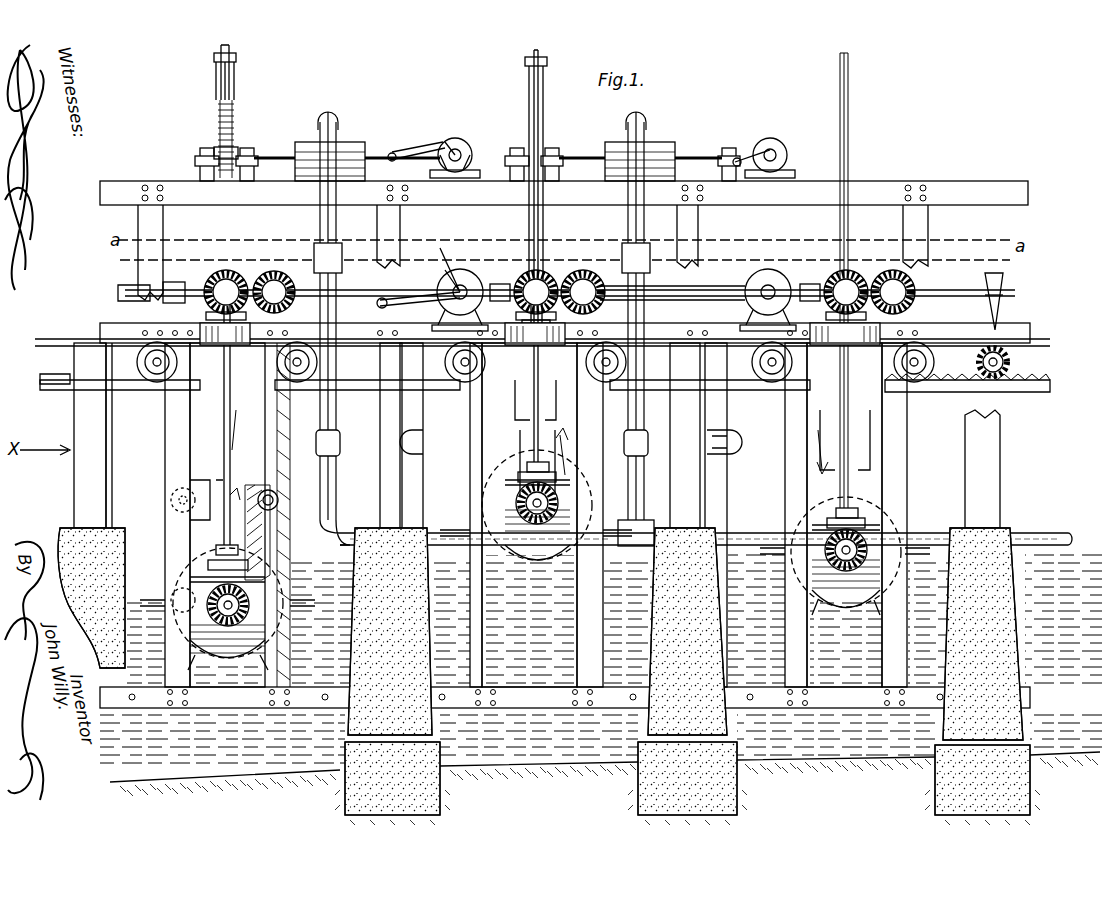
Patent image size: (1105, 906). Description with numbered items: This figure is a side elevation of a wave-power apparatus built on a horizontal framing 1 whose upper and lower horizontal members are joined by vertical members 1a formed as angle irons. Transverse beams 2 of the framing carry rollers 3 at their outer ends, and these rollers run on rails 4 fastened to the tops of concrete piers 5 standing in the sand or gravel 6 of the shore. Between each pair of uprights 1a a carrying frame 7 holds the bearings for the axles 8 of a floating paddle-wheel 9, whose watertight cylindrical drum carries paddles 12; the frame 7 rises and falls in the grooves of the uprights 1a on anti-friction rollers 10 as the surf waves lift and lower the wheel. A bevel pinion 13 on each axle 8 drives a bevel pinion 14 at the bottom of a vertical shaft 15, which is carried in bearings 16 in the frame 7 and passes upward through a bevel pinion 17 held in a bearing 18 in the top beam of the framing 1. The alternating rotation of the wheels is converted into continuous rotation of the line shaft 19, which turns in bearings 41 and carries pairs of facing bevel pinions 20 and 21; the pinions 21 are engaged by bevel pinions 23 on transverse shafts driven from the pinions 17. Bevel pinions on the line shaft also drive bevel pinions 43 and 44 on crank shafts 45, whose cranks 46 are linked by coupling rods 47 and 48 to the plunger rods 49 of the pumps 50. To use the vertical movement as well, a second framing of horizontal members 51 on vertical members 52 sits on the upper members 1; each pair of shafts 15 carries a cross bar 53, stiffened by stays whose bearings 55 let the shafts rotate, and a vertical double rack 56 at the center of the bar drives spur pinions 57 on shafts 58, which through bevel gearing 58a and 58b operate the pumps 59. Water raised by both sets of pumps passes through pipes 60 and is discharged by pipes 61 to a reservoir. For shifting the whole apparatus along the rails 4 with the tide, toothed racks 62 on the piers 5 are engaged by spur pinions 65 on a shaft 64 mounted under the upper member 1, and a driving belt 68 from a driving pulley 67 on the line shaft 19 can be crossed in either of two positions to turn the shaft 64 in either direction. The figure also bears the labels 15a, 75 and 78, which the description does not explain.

The horizontal framing 1 is at (100, 330).
The vertical members 1a is at (165, 440).
The transverse beams 2 is at (140, 338).
The rollers 3 is at (137, 362).
The rails 4 is at (62, 390).
The piers 5 is at (537, 435).
The sand or gravel 6 is at (345, 790).
The carrying frame 7 is at (260, 490).
The axles 8 is at (265, 585).
The floating paddle-wheel 9 is at (546, 574).
The anti-friction rollers 10 is at (171, 502).
The paddles 12 is at (1020, 538).
The bevel pinion 13 is at (250, 610).
The bevel pinion 14 is at (190, 576).
The vertical shaft 15 is at (224, 490).
The rod 15a is at (848, 102).
The vertical bearings 16 is at (216, 550).
The bevel pinion 17 is at (175, 282).
The bearing 18 is at (222, 350).
The line shaft 19 is at (150, 292).
The bevel pinions 20 is at (220, 270).
The bevel pinions 21 is at (280, 278).
The bevel pinion 23 is at (268, 278).
The bearings 41 is at (118, 293).
The bevel pinion 43 is at (370, 290).
The bevel pinion 44 is at (455, 268).
The crank shafts 45 is at (465, 280).
The cranks 46 is at (440, 306).
The coupling rods 47 is at (460, 285).
The coupling rods 48 is at (705, 290).
The plunger rods 49 is at (740, 310).
The pumps 50 is at (372, 294).
The horizontal members 51 is at (135, 170).
The vertical members 52 is at (150, 218).
The cross bars 53 is at (236, 57).
The bearings 55 is at (545, 135).
The vertical double rack 56 is at (234, 108).
The spur pinions 57 is at (238, 150).
The rotatable shafts 58 is at (200, 152).
The bevel gearing 58a is at (440, 148).
The bevel gearing 58b is at (462, 145).
The pumps 59 is at (345, 150).
The pipes 60 is at (675, 270).
The pipes 61 is at (644, 192).
The toothed racks 62 is at (45, 384).
The shaft 64 is at (1010, 364).
The spur pinion 65 is at (1030, 385).
The driving pulley 67 is at (1000, 312).
The driving belt 68 is at (1003, 276).
The collar 75 is at (250, 276).
The hub 78 is at (230, 270).